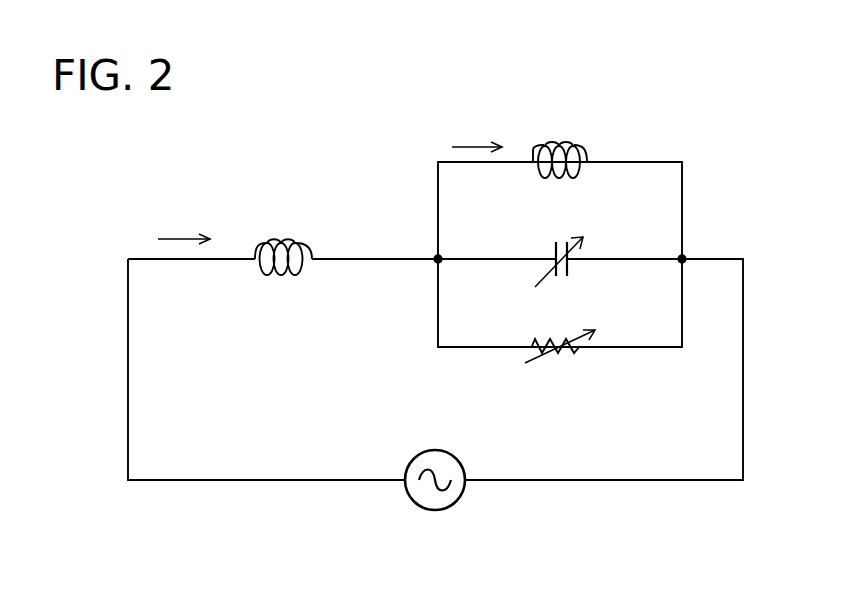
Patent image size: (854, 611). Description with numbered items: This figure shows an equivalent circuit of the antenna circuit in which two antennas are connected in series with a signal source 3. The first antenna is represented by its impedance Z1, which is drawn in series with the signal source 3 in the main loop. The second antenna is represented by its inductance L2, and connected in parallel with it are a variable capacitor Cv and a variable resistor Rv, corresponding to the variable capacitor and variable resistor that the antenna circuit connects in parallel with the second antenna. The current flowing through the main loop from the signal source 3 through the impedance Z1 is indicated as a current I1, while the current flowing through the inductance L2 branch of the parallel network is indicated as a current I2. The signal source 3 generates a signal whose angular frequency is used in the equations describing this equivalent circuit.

The signal source 3 is at (435, 510).
The impedance of the antenna 1 Z1 is at (283, 272).
The inductance of the antenna 2 L2 is at (560, 176).
The variable capacitor Cv is at (559, 272).
The variable resistor Rv is at (560, 358).
The current I1 is at (184, 228).
The current I2 is at (477, 135).